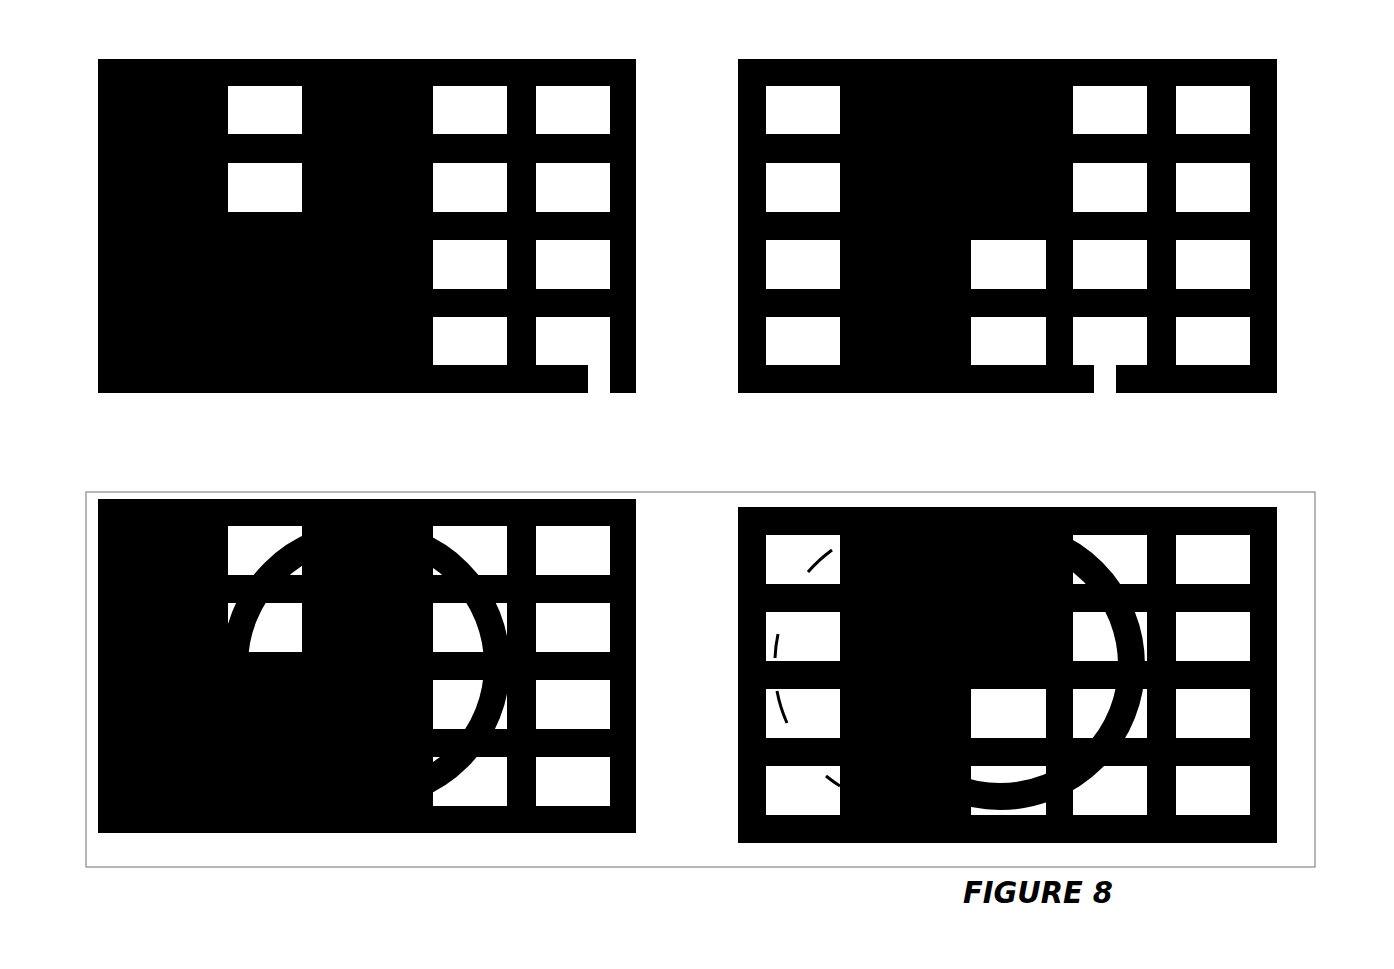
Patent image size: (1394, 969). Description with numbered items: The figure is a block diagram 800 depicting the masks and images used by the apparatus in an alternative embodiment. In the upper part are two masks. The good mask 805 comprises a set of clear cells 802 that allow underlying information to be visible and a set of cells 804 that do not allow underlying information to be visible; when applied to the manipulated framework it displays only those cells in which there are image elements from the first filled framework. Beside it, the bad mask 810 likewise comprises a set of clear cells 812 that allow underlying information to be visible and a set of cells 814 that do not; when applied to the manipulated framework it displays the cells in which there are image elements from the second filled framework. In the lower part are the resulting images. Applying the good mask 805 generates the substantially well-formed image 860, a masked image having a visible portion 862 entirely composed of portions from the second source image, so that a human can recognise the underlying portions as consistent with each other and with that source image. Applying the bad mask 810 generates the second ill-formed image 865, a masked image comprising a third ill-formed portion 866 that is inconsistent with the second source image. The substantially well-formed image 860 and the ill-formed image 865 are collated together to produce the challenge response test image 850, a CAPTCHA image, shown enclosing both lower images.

The block diagram 800 is at (1316, 122).
The clear cells 802 is at (597, 346).
The cells 804 is at (245, 393).
The good mask 805 is at (367, 393).
The bad mask 810 is at (1007, 393).
The clear cells 812 is at (1105, 338).
The cells 814 is at (908, 393).
The challenge response test image 850 is at (1162, 492).
The substantially well-formed image 860 is at (637, 727).
The visible portion 862 is at (450, 542).
The second ill-formed image 865 is at (736, 653).
The third ill-formed portion 866 is at (778, 636).